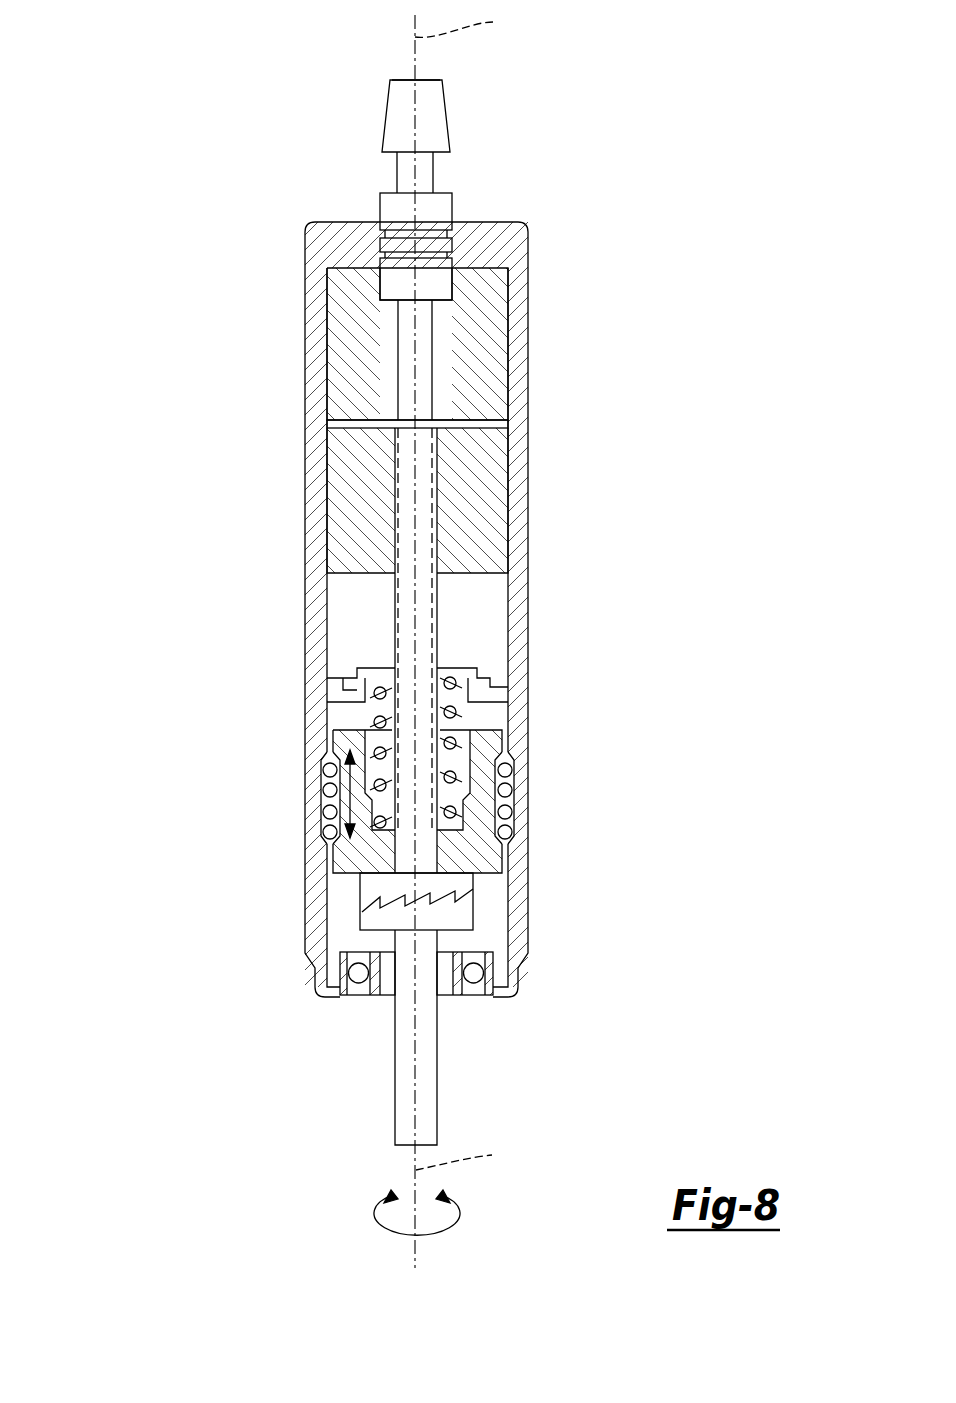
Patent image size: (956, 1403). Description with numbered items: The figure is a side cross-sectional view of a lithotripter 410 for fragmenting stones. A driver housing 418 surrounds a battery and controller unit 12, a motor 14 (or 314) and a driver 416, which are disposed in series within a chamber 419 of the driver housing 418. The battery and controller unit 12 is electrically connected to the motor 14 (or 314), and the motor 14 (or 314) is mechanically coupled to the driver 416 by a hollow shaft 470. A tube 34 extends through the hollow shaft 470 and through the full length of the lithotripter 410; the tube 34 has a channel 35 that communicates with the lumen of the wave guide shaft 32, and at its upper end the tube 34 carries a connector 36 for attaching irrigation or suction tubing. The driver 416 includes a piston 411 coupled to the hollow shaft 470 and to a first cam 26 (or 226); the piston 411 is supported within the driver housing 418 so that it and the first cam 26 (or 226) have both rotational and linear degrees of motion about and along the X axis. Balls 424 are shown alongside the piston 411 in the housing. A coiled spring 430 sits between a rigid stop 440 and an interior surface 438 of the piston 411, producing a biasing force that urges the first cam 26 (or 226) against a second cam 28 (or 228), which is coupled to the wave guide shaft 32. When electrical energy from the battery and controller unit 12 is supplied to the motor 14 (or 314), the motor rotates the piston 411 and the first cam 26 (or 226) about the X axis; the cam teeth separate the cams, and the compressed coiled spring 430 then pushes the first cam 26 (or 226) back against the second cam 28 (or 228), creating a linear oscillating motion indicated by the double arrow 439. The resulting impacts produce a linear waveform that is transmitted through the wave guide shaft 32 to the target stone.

The lithotripter 410 is at (388, 639).
The driver housing 418 is at (305, 421).
The connector 36 is at (387, 115).
The channel 35 is at (402, 78).
The tube 34 is at (433, 172).
The battery and controller unit 12 is at (345, 300).
The chamber 419 is at (495, 423).
The motor 14 is at (497, 467).
The motor 314 is at (483, 500).
The hollow shaft 470 is at (395, 583).
The rigid stop 440 is at (357, 682).
The driver 416 is at (383, 779).
The piston 411 is at (485, 860).
The balls 424 is at (323, 771).
The interior surface 438 is at (378, 828).
The coiled spring 430 is at (453, 685).
The double arrow 439 is at (344, 800).
The first cam 26 is at (466, 890).
The first cam 226 is at (509, 893).
The second cam 28 is at (455, 918).
The second cam 228 is at (516, 915).
The wave guide shaft 32 is at (440, 1090).